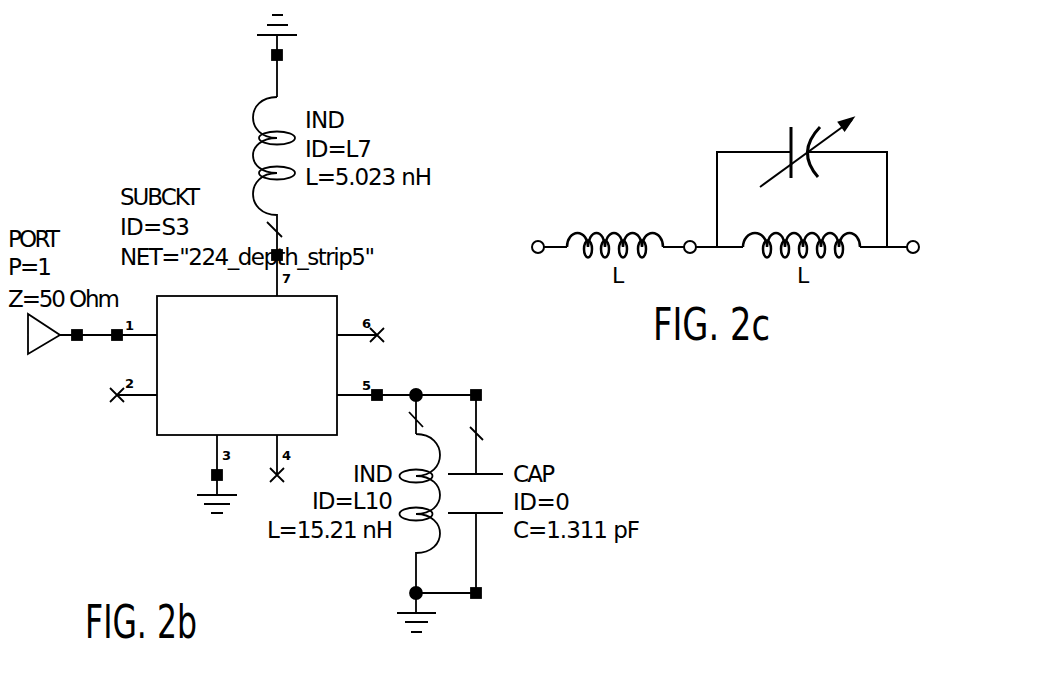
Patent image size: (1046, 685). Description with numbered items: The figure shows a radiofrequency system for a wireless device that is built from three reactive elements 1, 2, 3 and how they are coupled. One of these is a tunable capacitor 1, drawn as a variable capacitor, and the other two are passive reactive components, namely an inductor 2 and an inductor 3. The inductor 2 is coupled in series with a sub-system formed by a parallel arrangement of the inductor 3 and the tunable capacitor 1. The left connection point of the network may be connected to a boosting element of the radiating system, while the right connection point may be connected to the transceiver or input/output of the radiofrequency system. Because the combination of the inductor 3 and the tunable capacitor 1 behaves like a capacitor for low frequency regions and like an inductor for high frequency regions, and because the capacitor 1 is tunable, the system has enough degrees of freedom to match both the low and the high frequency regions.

The tunable capacitor 1 is at (787, 130).
The inductor 2 is at (598, 233).
The inductor 3 is at (829, 233).